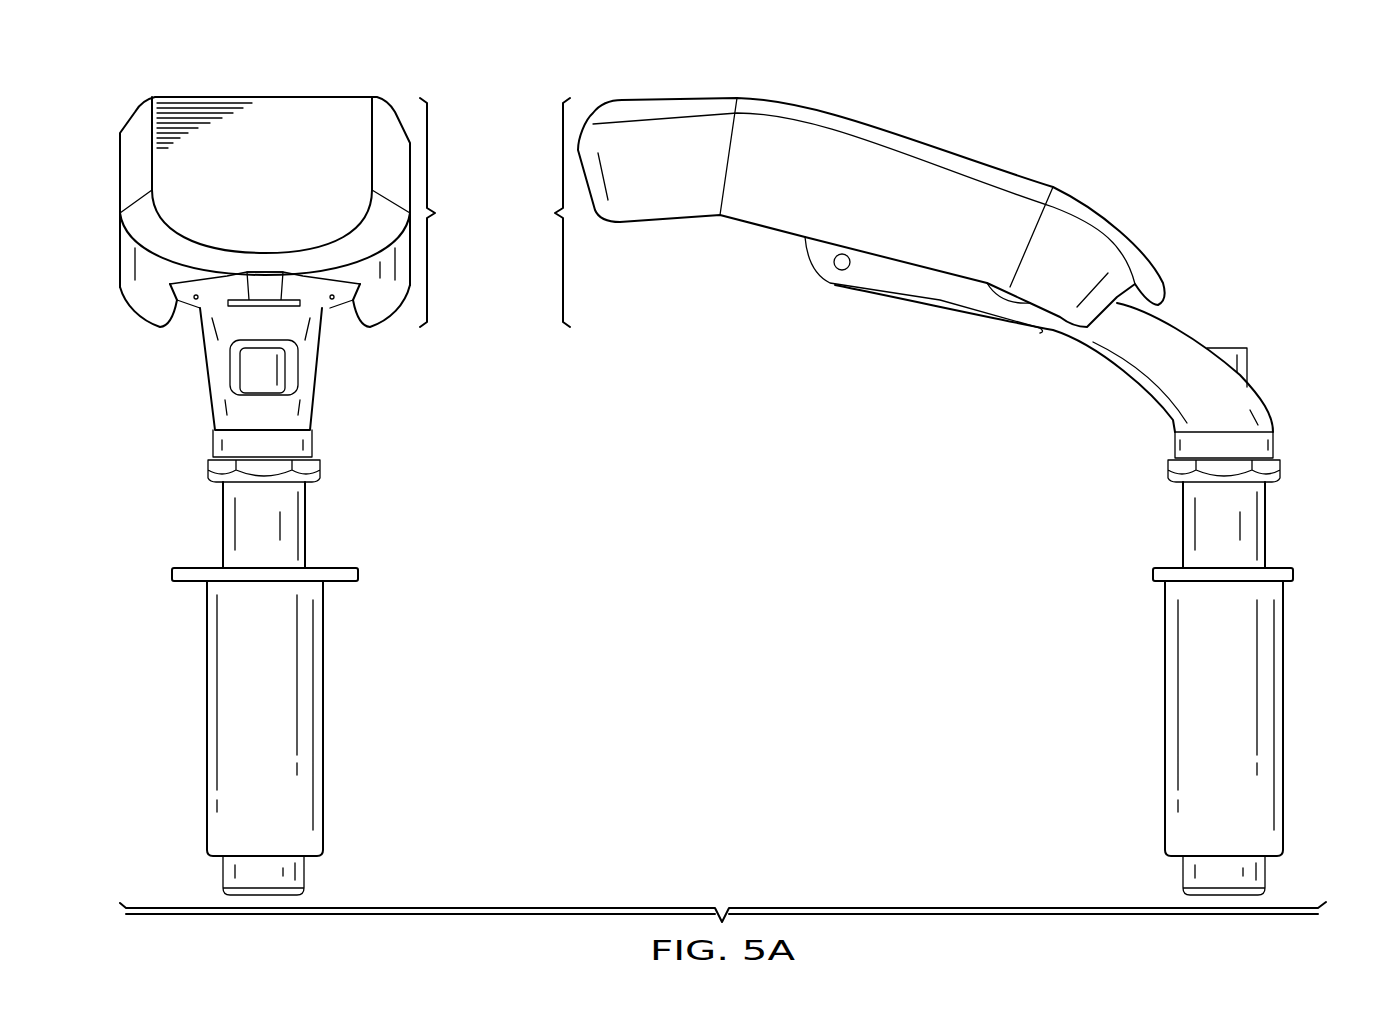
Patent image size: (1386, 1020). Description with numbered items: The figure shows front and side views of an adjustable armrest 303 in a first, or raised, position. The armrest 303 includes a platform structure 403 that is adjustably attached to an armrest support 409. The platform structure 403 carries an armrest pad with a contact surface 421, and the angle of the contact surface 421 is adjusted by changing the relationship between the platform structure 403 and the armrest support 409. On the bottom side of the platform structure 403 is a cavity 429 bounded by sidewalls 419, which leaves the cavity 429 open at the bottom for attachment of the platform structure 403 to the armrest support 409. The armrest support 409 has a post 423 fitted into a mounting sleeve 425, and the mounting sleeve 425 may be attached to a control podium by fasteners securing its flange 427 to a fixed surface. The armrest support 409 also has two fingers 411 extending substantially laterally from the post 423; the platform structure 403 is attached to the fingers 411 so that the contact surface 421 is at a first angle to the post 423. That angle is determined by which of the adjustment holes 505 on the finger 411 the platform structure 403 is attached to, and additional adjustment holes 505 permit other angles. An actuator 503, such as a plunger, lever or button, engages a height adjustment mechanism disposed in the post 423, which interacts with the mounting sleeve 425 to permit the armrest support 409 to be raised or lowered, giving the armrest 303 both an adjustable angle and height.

The adjustable armrest 303 is at (1200, 110).
The platform structure 403 is at (495, 212).
The armrest support 409 is at (318, 413).
The fingers 411 is at (805, 262).
The sidewalls 419 is at (148, 318).
The contact surface 421 is at (215, 95).
The post 423 is at (222, 520).
The mounting sleeve 425 is at (205, 718).
The flange 427 is at (172, 578).
The cavity 429 is at (188, 338).
The actuator 503 is at (282, 372).
The adjustment holes 505 is at (838, 279).